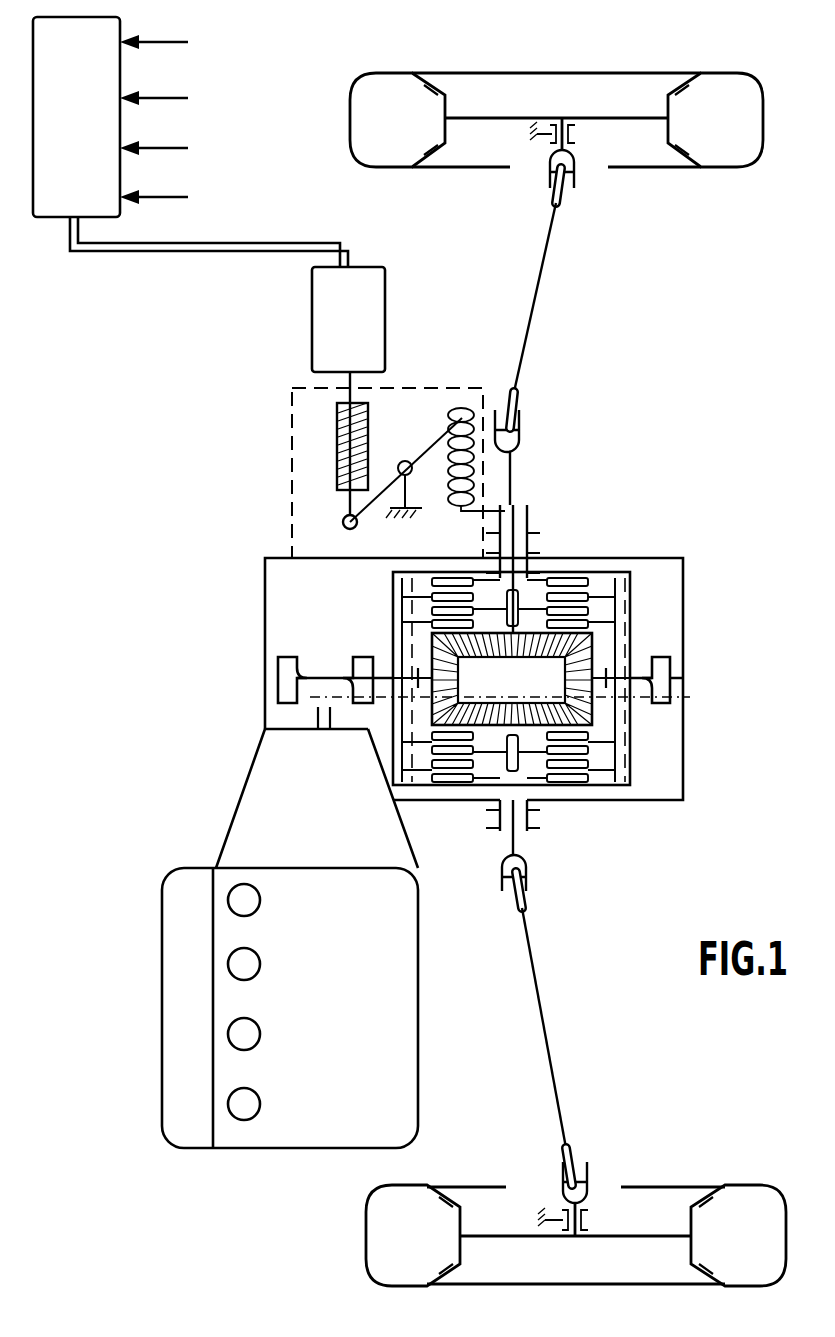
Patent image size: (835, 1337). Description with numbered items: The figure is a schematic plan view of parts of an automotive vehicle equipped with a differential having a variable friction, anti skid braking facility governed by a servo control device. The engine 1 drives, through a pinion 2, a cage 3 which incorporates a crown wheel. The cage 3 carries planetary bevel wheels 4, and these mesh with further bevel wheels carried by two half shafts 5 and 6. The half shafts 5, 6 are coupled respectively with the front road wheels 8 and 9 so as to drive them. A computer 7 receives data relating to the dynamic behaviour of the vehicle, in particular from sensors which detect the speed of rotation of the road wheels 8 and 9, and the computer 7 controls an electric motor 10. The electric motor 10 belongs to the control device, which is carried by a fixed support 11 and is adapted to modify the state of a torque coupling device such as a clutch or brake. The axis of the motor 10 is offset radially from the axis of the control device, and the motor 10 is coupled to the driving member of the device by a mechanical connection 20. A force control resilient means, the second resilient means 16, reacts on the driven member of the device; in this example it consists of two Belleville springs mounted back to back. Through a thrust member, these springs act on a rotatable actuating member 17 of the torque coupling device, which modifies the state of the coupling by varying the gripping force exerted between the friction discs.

The engine 1 is at (156, 908).
The pinion 2 is at (267, 678).
The cage 3 is at (625, 712).
The planetary bevel wheels 4 is at (558, 677).
The half shaft 5 is at (513, 470).
The half shaft 6 is at (519, 838).
The computer 7 is at (88, 137).
The front road wheel 8 is at (693, 1185).
The front road wheel 9 is at (680, 168).
The electric motor 10 is at (322, 340).
The fixed support 11 is at (292, 487).
The second resilient means 16 is at (463, 416).
The rotatable actuating member 17 is at (520, 522).
The mechanical connection 20 is at (335, 437).